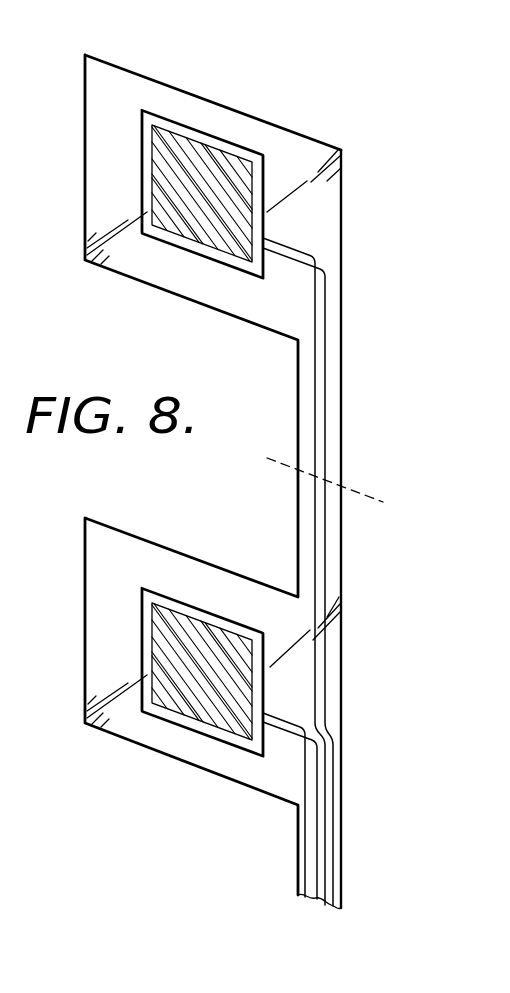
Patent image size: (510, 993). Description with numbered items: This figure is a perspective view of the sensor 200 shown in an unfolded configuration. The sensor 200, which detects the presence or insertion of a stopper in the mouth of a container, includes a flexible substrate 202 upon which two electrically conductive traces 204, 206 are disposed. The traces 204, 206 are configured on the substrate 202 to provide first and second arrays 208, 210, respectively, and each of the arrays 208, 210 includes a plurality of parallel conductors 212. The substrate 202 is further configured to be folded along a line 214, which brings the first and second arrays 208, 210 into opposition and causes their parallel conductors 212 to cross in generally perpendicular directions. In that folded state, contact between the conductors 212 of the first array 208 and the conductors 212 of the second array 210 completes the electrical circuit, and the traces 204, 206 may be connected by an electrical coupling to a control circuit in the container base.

The sensor 200 is at (314, 71).
The flexible substrate 202 is at (168, 95).
The electrically conductive trace 204 is at (312, 896).
The electrically conductive trace 206 is at (325, 906).
The first array 208 is at (203, 737).
The second array 210 is at (203, 257).
The parallel conductors 212 is at (243, 162).
The line 214 is at (302, 471).